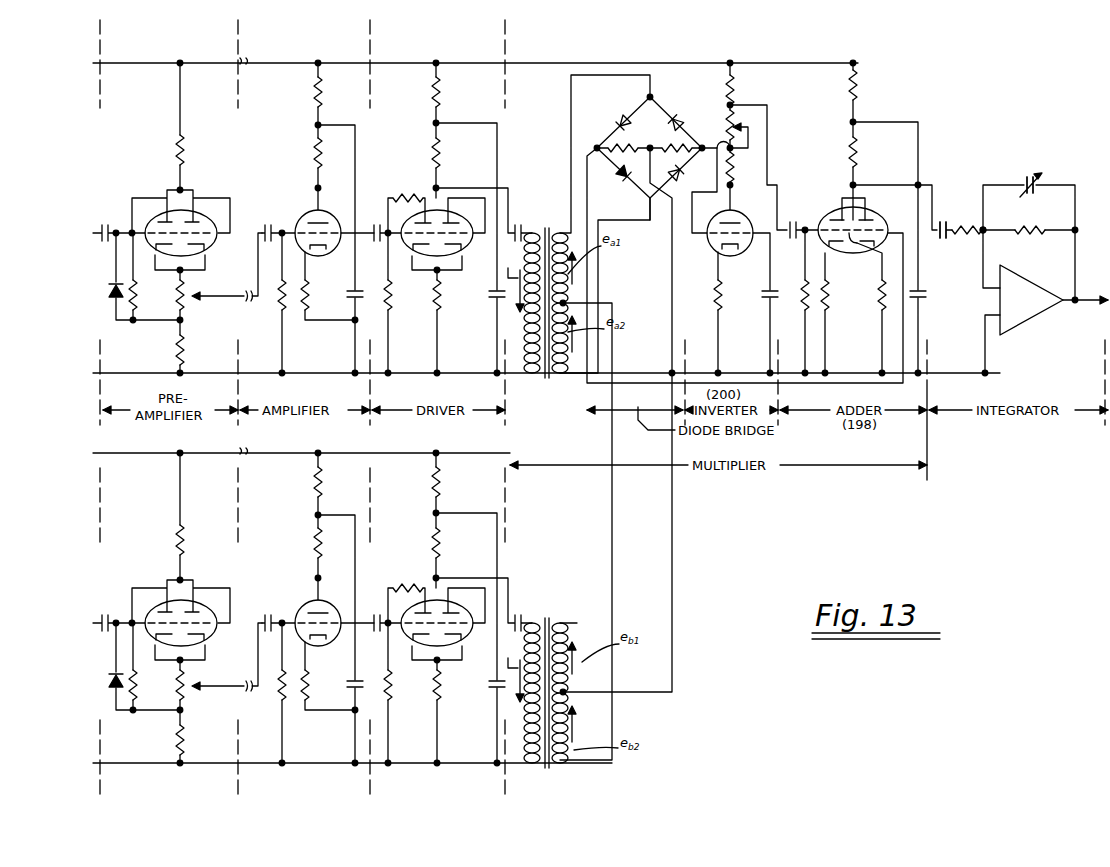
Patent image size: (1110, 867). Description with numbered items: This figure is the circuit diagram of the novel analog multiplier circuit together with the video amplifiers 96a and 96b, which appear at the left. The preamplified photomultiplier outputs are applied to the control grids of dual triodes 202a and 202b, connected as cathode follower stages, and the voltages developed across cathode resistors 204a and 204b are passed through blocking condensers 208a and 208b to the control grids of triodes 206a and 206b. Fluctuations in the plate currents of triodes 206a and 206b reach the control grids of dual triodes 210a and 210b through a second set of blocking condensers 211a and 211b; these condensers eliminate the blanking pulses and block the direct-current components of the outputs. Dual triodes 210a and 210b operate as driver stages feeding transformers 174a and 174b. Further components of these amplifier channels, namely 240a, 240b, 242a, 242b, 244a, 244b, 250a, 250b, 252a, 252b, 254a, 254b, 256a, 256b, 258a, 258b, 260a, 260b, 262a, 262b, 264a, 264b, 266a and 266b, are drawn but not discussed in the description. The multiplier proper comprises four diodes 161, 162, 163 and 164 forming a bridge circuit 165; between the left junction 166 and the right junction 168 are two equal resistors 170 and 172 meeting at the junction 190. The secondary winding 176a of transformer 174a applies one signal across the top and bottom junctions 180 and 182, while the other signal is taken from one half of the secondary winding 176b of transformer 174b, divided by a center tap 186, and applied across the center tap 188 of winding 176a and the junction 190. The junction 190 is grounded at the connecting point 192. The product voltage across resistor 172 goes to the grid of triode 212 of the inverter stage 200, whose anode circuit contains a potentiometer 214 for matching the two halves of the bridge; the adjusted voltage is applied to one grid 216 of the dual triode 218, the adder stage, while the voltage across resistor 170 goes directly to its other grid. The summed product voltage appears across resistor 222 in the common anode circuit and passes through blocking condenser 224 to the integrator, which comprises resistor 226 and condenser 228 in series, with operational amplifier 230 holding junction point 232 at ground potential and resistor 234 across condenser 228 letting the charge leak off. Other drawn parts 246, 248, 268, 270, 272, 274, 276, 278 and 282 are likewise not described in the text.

The video amplifier 96a is at (144, 163).
The video amplifier 96b is at (144, 553).
The dual triode 202a is at (229, 199).
The dual triode 202b is at (229, 589).
The cathode resistor 204a is at (188, 299).
The cathode resistor 204b is at (188, 689).
The triode 206a is at (302, 221).
The triode 206b is at (302, 611).
The blocking condenser 208a is at (266, 225).
The blocking condenser 208b is at (266, 615).
The dual triode 210a is at (446, 206).
The dual triode 210b is at (446, 596).
The blocking condenser 211a is at (378, 218).
The blocking condenser 211b is at (378, 608).
The diode 240a is at (110, 293).
The diode 240b is at (110, 683).
The bypass capacitor 242a is at (351, 290).
The bypass capacitor 242b is at (351, 680).
The bypass capacitor 244a is at (488, 296).
The bypass capacitor 244b is at (488, 686).
The resistor 250a is at (138, 300).
The resistor 250b is at (138, 690).
The grid resistor 252a is at (278, 304).
The grid resistor 252b is at (278, 694).
The cathode resistor 254a is at (310, 298).
The cathode resistor 254b is at (310, 688).
The plate resistor 256a is at (312, 154).
The plate resistor 256b is at (312, 544).
The dropping resistor 258a is at (312, 90).
The dropping resistor 258b is at (312, 480).
The grid resistor 260a is at (395, 300).
The grid resistor 260b is at (395, 690).
The dropping resistor 262a is at (442, 90).
The dropping resistor 262b is at (442, 480).
The plate resistor 264a is at (423, 149).
The plate resistor 264b is at (423, 539).
The cathode resistor 266a is at (442, 296).
The cathode resistor 266b is at (442, 686).
The transformer 174a is at (545, 229).
The transformer 174b is at (545, 619).
The secondary winding 176a is at (567, 286).
The secondary winding 176b is at (577, 687).
The center tap 188 is at (564, 304).
The center tap 186 is at (566, 693).
The diode 161 is at (615, 117).
The diode 162 is at (622, 183).
The diode 163 is at (682, 124).
The diode 164 is at (680, 174).
The bridge circuit 165 is at (669, 116).
The left junction 166 is at (616, 176).
The right junction 168 is at (718, 190).
The resistor 170 is at (608, 135).
The resistor 172 is at (690, 136).
The top junction 180 is at (650, 96).
The bottom junction 182 is at (653, 216).
The junction of the two resistors 190 is at (645, 145).
The connecting point 192 is at (670, 373).
The inverter stage 200 is at (858, 245).
The triode 212 is at (707, 258).
The potentiometer 214 is at (749, 136).
The grid 216 is at (818, 203).
The dual triode 218 is at (872, 214).
The resistor 222 is at (859, 155).
The blocking condenser 224 is at (942, 240).
The resistor 226 is at (968, 222).
The condenser 228 is at (1032, 171).
The operational amplifier 230 is at (1028, 311).
The junction point 232 is at (985, 229).
The resistor 234 is at (1030, 240).
The capacitor 246 is at (766, 288).
The capacitor 248 is at (926, 293).
The cathode resistor 268 is at (703, 300).
The resistor 270 is at (744, 162).
The resistor 272 is at (737, 91).
The grid resistor 274 is at (799, 297).
The cathode resistor 276 is at (828, 298).
The cathode resistor 278 is at (878, 287).
The dropping resistor 282 is at (860, 94).